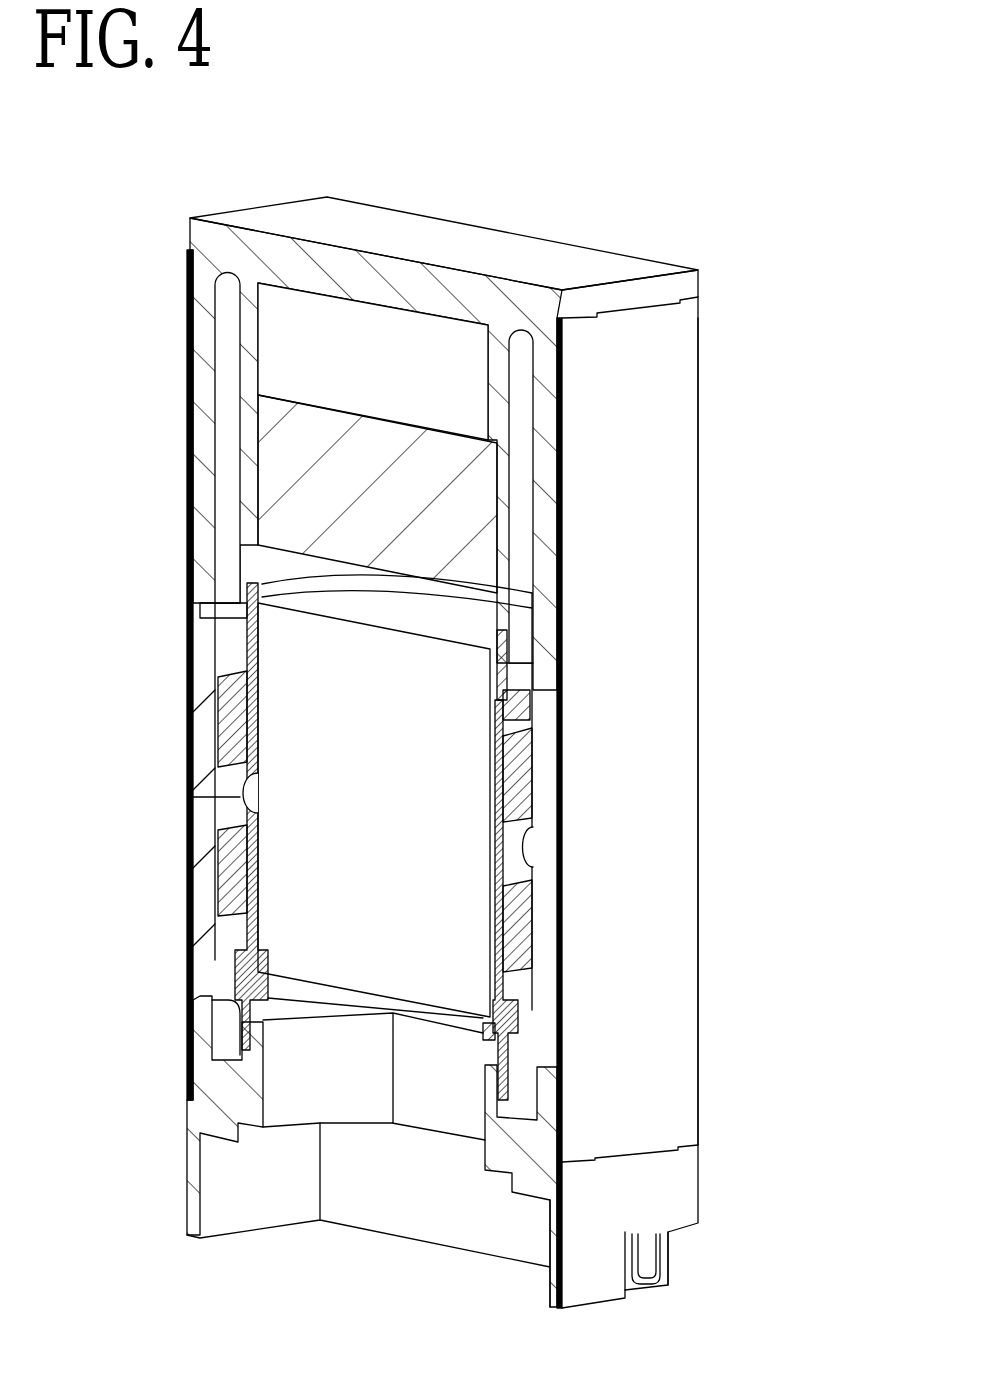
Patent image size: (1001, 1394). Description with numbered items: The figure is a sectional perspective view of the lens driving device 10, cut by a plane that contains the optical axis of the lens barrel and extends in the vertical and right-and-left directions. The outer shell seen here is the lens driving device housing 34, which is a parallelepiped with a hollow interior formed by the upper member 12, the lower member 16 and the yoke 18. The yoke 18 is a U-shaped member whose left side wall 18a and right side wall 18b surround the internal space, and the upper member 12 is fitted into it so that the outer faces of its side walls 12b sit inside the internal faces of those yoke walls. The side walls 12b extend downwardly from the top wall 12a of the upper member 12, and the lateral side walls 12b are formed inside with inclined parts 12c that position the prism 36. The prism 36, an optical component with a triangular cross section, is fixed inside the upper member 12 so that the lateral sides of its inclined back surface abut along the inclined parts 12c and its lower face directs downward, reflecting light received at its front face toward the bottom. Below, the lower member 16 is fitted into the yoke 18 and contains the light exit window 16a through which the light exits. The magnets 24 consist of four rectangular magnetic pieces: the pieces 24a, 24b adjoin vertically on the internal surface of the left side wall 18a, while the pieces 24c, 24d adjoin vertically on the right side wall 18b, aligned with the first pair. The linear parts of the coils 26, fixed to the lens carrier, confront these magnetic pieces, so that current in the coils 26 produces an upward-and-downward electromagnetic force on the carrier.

The lens driving device 10 is at (711, 190).
The upper member 12 is at (453, 216).
The top wall 12a is at (362, 204).
The side walls 12b is at (212, 458).
The inclined parts 12c is at (262, 485).
The lower member 16 is at (704, 1176).
The light exit window 16a is at (350, 1095).
The yoke 18 is at (704, 405).
The left side wall 18a is at (186, 323).
The right side wall 18b is at (672, 715).
The magnets 24 is at (198, 968).
The magnetic piece 24a is at (205, 730).
The magnetic piece 24b is at (203, 813).
The magnetic piece 24c is at (533, 800).
The magnetic piece 24d is at (520, 910).
The coils 26 is at (228, 875).
The lens driving device housing 34 is at (704, 660).
The prism 36 is at (400, 440).